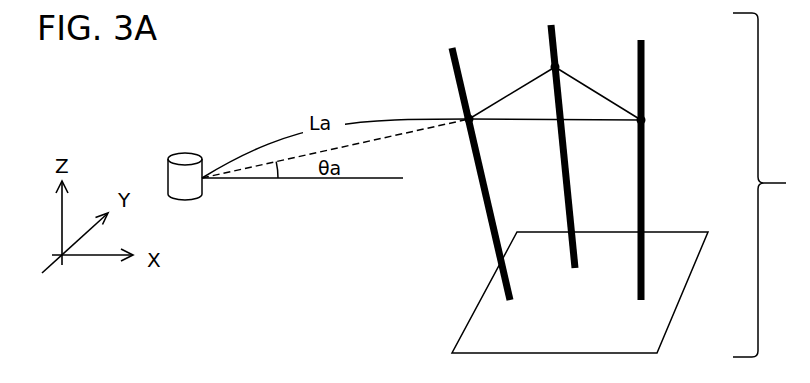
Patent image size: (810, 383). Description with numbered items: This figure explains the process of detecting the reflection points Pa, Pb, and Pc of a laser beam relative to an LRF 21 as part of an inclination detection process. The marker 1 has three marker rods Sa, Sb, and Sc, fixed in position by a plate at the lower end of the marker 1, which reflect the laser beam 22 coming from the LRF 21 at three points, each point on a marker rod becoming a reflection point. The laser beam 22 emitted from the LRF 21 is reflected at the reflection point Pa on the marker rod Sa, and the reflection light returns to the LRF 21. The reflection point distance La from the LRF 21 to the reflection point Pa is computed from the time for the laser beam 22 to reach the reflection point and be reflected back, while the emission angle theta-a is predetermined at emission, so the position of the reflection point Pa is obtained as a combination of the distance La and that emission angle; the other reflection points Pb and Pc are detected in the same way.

The marker 1 is at (630, 185).
The LRF 21 is at (177, 153).
The laser beam 22 is at (403, 133).